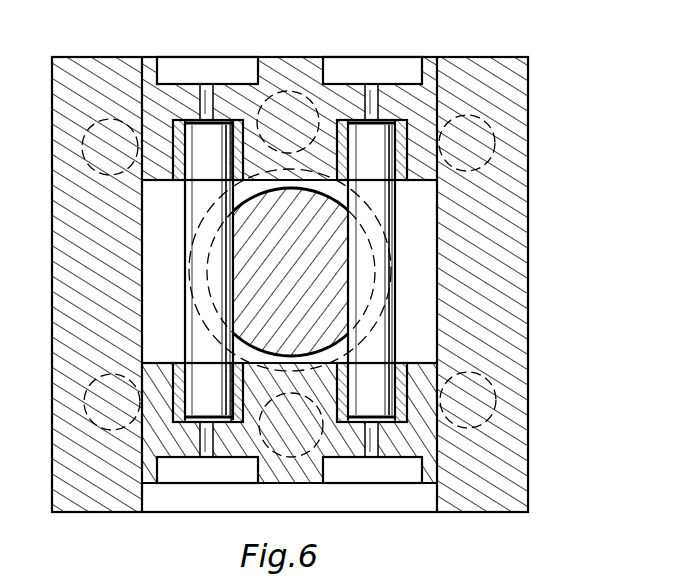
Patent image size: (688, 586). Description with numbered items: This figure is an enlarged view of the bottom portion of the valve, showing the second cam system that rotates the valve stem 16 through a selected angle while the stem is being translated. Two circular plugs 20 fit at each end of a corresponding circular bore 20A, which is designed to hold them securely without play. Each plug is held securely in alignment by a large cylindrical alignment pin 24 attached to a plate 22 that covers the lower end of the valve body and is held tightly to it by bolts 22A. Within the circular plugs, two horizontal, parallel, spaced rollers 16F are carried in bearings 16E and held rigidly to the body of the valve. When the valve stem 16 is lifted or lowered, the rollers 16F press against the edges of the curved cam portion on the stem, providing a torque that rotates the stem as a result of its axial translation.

The valve stem 16 is at (332, 290).
The bearings 16E is at (405, 373).
The rollers 16F is at (395, 213).
The circular plugs 20 is at (273, 57).
The circular bore 20A is at (210, 83).
The plate 22 is at (423, 277).
The bolts 22A is at (496, 400).
The alignment pin 24 is at (313, 485).